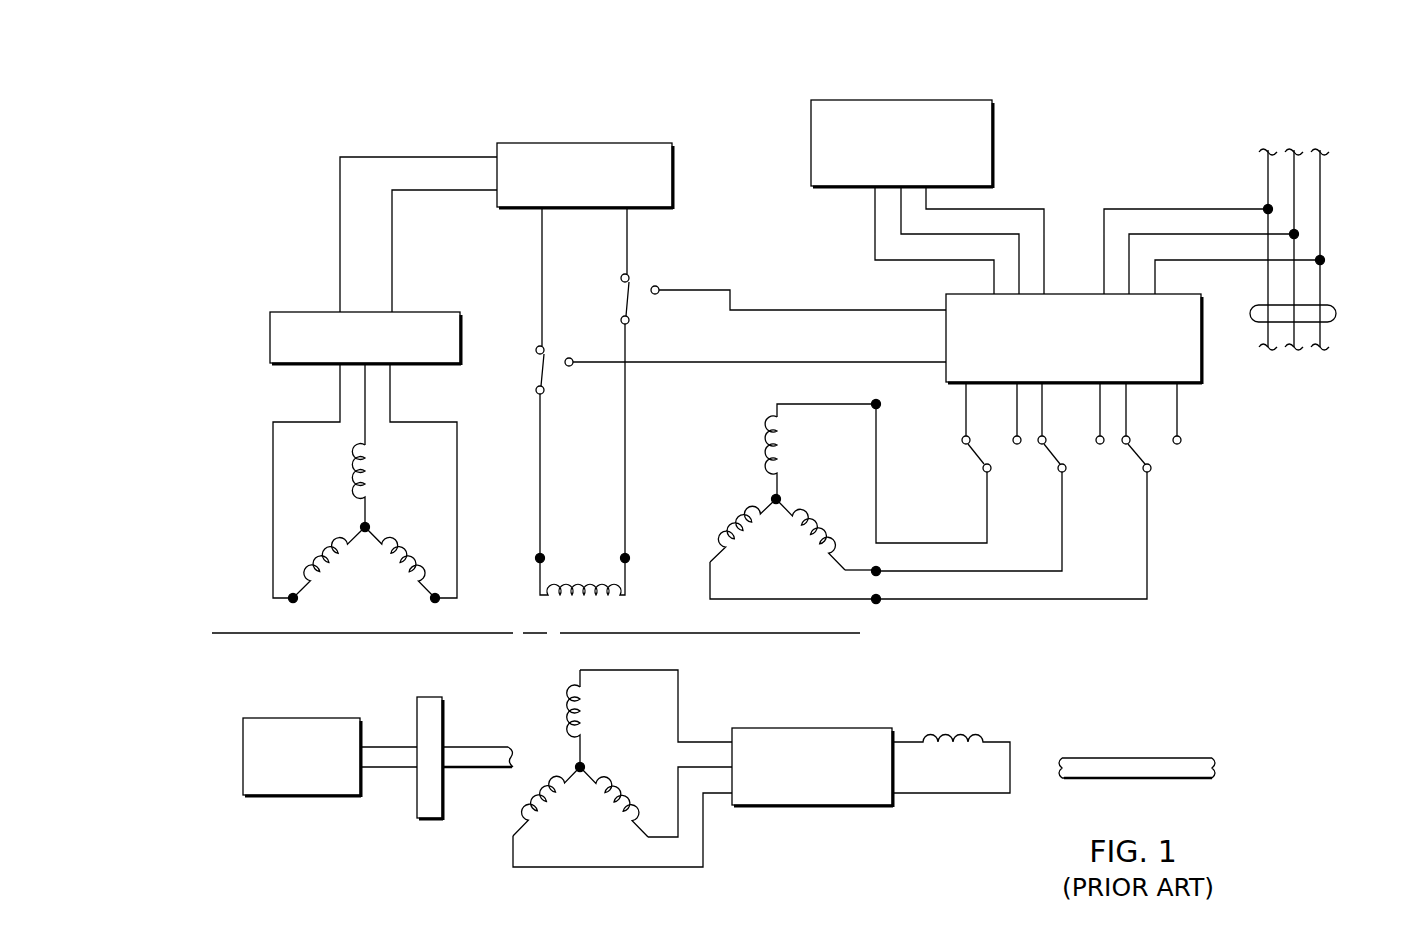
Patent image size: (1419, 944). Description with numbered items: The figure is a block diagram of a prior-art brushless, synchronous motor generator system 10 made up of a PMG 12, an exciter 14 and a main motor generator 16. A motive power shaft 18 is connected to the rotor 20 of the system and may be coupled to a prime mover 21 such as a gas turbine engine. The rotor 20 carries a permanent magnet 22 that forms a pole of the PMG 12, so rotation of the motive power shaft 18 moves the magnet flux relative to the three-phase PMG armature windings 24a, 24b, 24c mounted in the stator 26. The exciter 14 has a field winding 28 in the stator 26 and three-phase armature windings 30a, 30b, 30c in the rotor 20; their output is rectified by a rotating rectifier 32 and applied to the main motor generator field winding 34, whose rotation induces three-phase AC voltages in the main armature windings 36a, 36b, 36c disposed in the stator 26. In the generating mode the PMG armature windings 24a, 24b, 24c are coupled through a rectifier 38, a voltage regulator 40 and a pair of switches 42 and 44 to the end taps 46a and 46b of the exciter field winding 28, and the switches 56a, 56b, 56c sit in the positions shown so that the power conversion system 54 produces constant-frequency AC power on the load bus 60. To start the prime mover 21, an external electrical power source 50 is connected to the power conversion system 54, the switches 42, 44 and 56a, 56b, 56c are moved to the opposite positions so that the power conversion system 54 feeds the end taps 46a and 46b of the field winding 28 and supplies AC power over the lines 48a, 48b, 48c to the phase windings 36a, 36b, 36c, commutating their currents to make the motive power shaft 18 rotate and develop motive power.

The brushless synchronous motor generator system 10 is at (1252, 658).
The PMG 12 is at (243, 530).
The exciter 14 is at (514, 552).
The main motor generator 16 is at (695, 528).
The motive power shaft 18 is at (390, 770).
The rotor 20 is at (475, 832).
The prime mover 21 is at (288, 718).
The permanent magnet 22 is at (444, 720).
The PMG armature winding 24a is at (360, 470).
The PMG armature winding 24b is at (390, 530).
The PMG armature winding 24c is at (295, 575).
The stator 26 is at (245, 614).
The exciter field winding 28 is at (552, 598).
The exciter armature winding 30a is at (590, 717).
The exciter armature winding 30b is at (620, 795).
The exciter armature winding 30c is at (543, 807).
The rotating rectifier 32 is at (813, 807).
The main motor generator field winding 34 is at (957, 733).
The main motor generator armature winding 36a is at (787, 453).
The main motor generator armature winding 36b is at (828, 540).
The main motor generator armature winding 36c is at (750, 537).
The rectifier 38 is at (300, 312).
The voltage regulator 40 is at (525, 143).
The switch 42 is at (626, 303).
The switch 44 is at (544, 378).
The end tap 46a is at (546, 557).
The end tap 46b is at (630, 557).
The line 48a is at (985, 516).
The line 48b is at (1063, 555).
The line 48c is at (1148, 573).
The external electrical power source 50 is at (832, 100).
The power conversion system 54 is at (1203, 372).
The switch 56a is at (982, 452).
The switch 56b is at (1060, 452).
The switch 56c is at (1150, 450).
The load bus 60 is at (1335, 306).